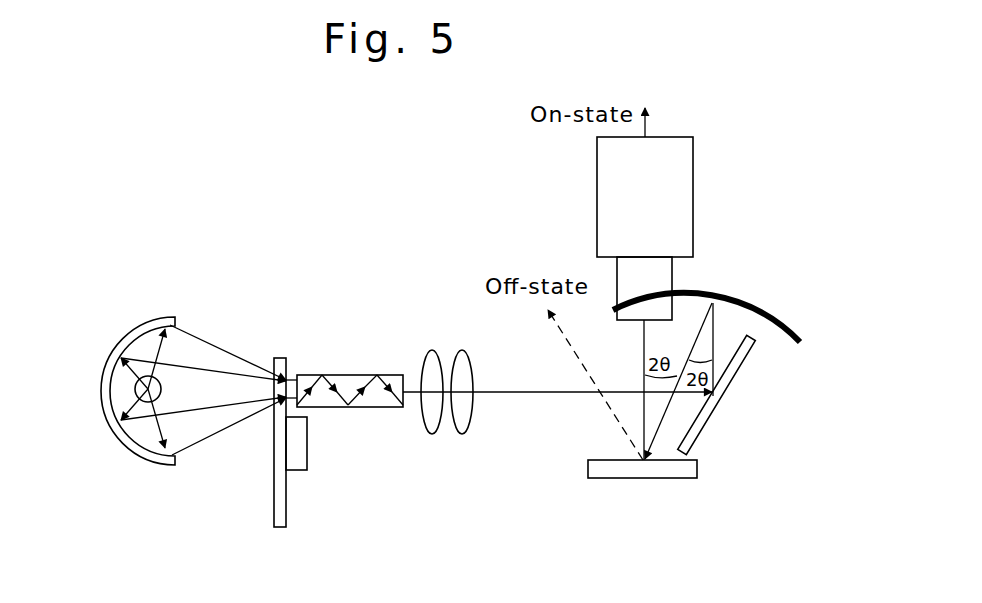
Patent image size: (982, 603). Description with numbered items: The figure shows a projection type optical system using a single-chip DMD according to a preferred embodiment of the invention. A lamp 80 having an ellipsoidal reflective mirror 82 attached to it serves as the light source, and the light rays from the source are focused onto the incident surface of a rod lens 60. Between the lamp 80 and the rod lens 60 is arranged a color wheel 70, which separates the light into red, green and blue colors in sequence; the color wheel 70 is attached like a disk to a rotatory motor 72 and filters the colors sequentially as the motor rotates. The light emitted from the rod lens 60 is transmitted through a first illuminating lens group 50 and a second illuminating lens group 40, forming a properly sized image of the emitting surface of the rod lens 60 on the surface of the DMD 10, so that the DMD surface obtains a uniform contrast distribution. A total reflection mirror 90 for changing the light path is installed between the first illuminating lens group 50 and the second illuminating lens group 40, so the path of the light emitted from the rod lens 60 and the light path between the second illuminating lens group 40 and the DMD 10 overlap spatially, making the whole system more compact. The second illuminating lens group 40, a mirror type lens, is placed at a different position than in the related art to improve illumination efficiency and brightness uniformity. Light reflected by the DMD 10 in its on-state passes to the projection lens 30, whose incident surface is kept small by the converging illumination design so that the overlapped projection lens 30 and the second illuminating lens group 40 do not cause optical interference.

The DMD 10 is at (588, 470).
The projection lens 30 is at (605, 168).
The second illuminating lens group 40 is at (733, 299).
The first illuminating lens group 50 is at (462, 350).
The rod lens 60 is at (350, 375).
The color wheel 70 is at (274, 508).
The rotatory motor 72 is at (303, 460).
The lamp 80 is at (135, 388).
The ellipsoidal reflective mirror 82 is at (122, 340).
The total reflection mirror 90 is at (743, 357).